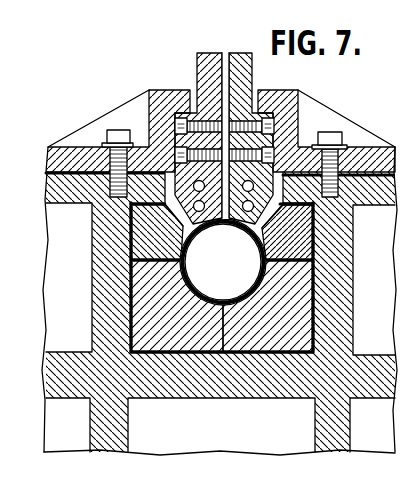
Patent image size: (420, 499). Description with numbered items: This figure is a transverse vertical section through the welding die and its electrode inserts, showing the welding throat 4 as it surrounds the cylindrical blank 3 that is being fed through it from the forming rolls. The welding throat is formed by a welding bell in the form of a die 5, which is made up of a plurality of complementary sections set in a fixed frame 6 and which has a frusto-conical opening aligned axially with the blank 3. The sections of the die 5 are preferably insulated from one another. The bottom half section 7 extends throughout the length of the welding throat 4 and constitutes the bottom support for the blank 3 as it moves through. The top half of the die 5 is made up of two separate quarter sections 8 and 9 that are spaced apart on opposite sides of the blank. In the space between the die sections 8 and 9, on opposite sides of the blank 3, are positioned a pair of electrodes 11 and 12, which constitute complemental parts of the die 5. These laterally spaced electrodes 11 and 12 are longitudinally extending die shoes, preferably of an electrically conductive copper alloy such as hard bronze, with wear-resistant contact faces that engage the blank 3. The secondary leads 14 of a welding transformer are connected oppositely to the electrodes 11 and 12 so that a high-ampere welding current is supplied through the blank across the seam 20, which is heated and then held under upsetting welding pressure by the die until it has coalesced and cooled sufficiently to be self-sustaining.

The cylindrical blank 3 is at (223, 179).
The welding throat 4 is at (185, 246).
The die 5 is at (138, 295).
The fixed frame 6 is at (51, 385).
The bottom half section 7 is at (297, 307).
The quarter section 8 is at (137, 240).
The quarter section 9 is at (298, 238).
The electrode 11 is at (169, 174).
The electrode 12 is at (297, 153).
The secondary leads 14 is at (242, 52).
The seam 20 is at (226, 224).